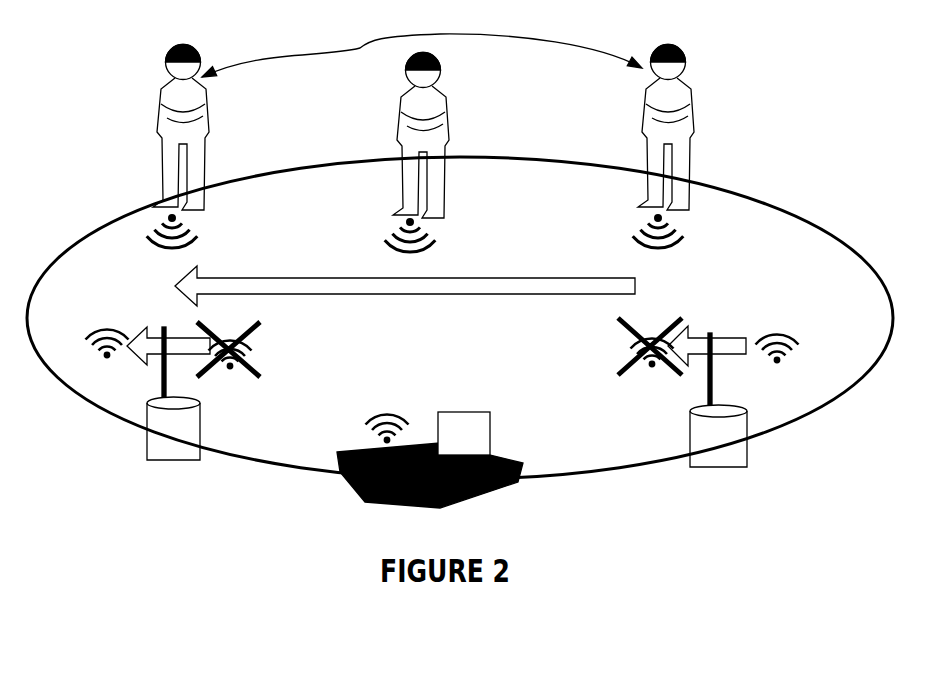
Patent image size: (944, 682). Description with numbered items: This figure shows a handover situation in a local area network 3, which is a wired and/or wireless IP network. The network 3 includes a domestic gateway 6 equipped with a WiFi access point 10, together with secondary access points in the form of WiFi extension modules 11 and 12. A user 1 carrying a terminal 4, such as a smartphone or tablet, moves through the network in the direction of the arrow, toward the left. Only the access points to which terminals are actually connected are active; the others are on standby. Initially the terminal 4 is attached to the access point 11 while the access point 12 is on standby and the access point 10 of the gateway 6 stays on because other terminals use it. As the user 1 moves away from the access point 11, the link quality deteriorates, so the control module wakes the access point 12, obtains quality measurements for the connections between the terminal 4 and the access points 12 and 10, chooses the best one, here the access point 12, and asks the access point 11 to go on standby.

The user 1 is at (390, 93).
The local area network 3 is at (800, 218).
The terminal 4 is at (145, 108).
The domestic gateway 6 is at (525, 468).
The WiFi access point 10 is at (373, 441).
The WiFi extension module 11 is at (748, 423).
The WiFi extension module 12 is at (137, 412).